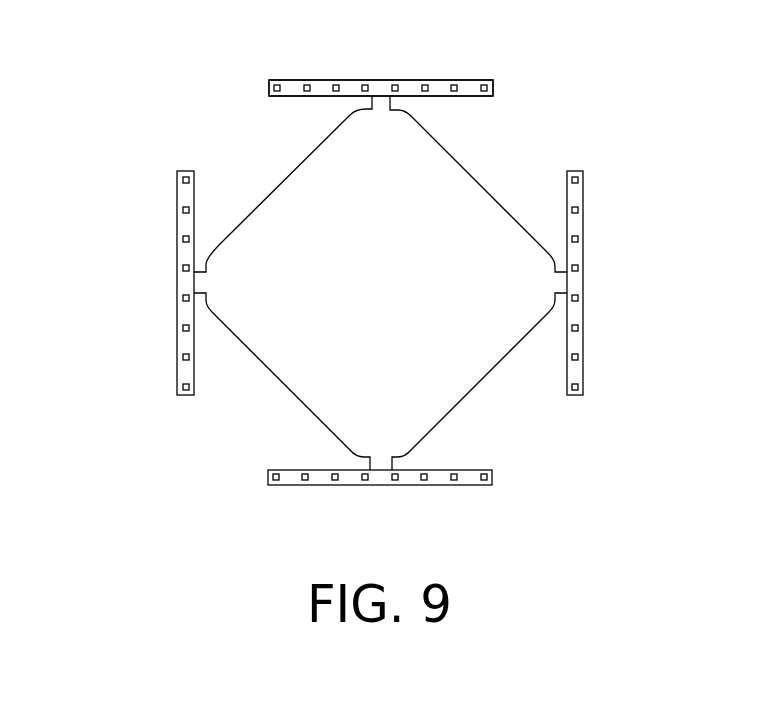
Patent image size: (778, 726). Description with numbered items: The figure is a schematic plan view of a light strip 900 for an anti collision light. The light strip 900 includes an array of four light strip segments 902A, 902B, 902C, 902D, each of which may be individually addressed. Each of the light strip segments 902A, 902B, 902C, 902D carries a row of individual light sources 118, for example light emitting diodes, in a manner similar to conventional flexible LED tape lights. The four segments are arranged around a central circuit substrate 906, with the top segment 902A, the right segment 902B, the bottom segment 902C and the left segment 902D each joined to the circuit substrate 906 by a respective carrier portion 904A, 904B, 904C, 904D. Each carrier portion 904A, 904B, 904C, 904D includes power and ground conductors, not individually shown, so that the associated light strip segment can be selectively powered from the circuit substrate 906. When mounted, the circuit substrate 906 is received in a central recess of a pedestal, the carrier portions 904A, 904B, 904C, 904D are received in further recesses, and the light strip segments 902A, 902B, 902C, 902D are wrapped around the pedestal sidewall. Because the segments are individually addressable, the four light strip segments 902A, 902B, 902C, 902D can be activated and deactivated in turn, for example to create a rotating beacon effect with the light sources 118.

The light strip 900 is at (140, 66).
The light strip segment 902A is at (467, 85).
The light strip segment 902B is at (578, 196).
The light strip segment 902C is at (467, 481).
The light strip segment 902D is at (182, 196).
The carrier portion 904A is at (379, 101).
The carrier portion 904B is at (563, 283).
The carrier portion 904C is at (380, 463).
The carrier portion 904D is at (197, 284).
The circuit substrate 906 is at (398, 294).
The light sources 118 is at (306, 84).